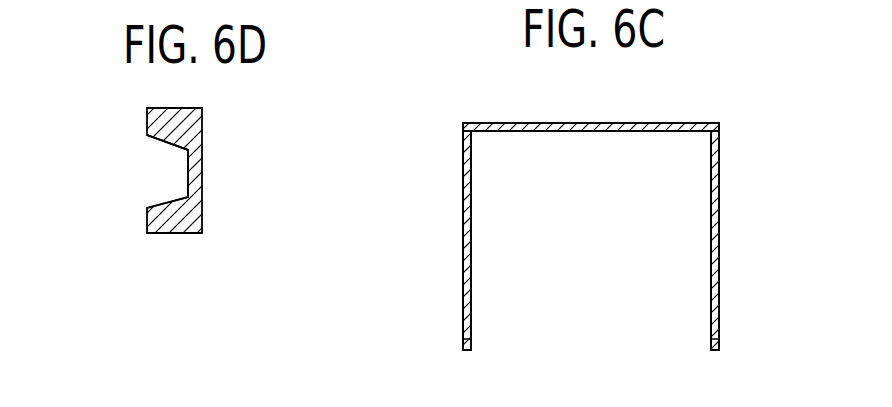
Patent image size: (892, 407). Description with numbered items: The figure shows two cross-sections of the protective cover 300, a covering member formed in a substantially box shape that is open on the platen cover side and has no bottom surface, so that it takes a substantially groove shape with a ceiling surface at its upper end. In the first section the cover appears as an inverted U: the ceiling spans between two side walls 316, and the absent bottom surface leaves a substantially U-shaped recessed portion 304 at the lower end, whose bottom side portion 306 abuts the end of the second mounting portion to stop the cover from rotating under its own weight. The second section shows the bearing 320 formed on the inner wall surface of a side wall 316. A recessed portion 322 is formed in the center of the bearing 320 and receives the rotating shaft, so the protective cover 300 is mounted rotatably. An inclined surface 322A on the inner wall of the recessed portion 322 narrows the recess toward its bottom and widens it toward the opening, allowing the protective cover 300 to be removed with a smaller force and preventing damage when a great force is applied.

In FIG. 6C, the protective cover 300 is at (668, 123).
In FIG. 6C, the recessed portion 304 is at (470, 178).
In FIG. 6C, the bottom side portion 306 is at (523, 124).
In FIG. 6C, the side wall 316 is at (465, 238).
In FIG. 6D, the bearing 320 is at (196, 125).
In FIG. 6D, the recessed portion 322 is at (168, 170).
In FIG. 6D, the inclined surface 322A is at (170, 150).